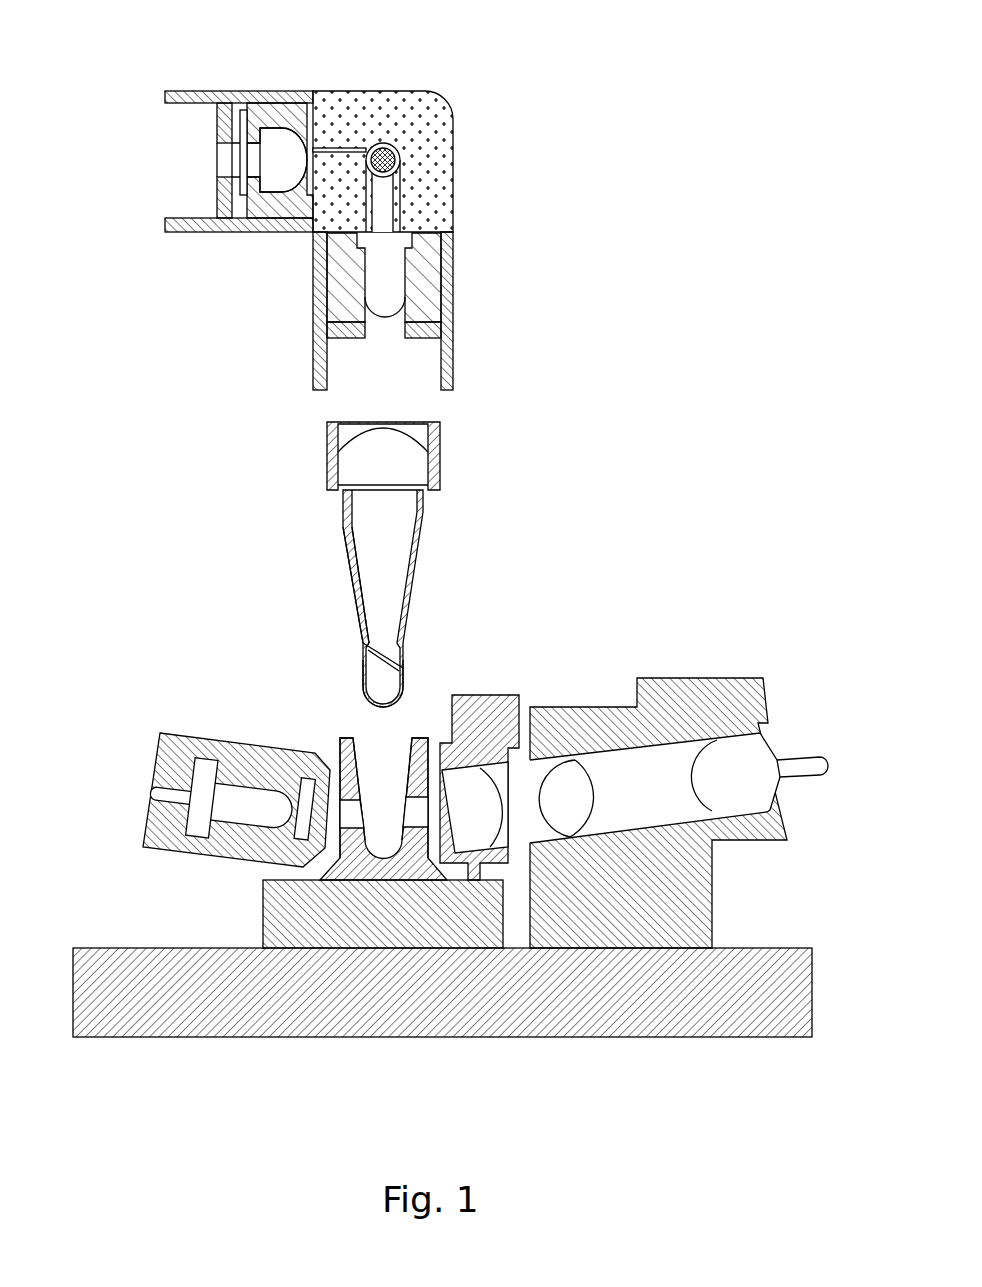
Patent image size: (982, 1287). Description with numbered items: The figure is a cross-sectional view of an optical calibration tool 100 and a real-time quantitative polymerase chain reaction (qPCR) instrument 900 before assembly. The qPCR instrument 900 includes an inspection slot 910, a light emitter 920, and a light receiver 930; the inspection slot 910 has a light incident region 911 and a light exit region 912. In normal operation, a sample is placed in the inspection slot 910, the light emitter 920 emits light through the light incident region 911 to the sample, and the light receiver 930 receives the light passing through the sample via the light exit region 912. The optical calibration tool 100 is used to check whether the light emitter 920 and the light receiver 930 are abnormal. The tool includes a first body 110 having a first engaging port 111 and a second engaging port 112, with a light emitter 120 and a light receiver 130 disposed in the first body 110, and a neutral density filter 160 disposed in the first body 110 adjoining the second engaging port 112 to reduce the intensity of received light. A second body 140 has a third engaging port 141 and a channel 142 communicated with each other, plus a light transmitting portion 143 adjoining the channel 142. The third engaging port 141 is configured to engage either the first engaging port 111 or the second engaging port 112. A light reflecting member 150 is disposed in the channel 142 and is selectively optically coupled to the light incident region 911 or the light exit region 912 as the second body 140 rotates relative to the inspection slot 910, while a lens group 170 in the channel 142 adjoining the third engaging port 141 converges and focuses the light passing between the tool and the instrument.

The optical calibration tool 100 is at (500, 87).
The first body 110 is at (433, 183).
The first engaging port 111 is at (461, 357).
The second engaging port 112 is at (200, 87).
The light emitter 120 is at (388, 283).
The light receiver 130 is at (290, 145).
The second body 140 is at (422, 515).
The third engaging port 141 is at (445, 433).
The channel 142 is at (335, 548).
The light transmitting portion 143 is at (420, 651).
The light reflecting member 150 is at (383, 662).
The neutral density filter 160 is at (247, 198).
The lens group 170 is at (358, 463).
The real-time quantitative polymerase chain reaction (qPCR) instrument 900 is at (116, 683).
The inspection slot 910 is at (374, 870).
The light incident region 911 is at (353, 846).
The light exit region 912 is at (418, 846).
The light emitter 920 is at (240, 803).
The light receiver 930 is at (750, 787).